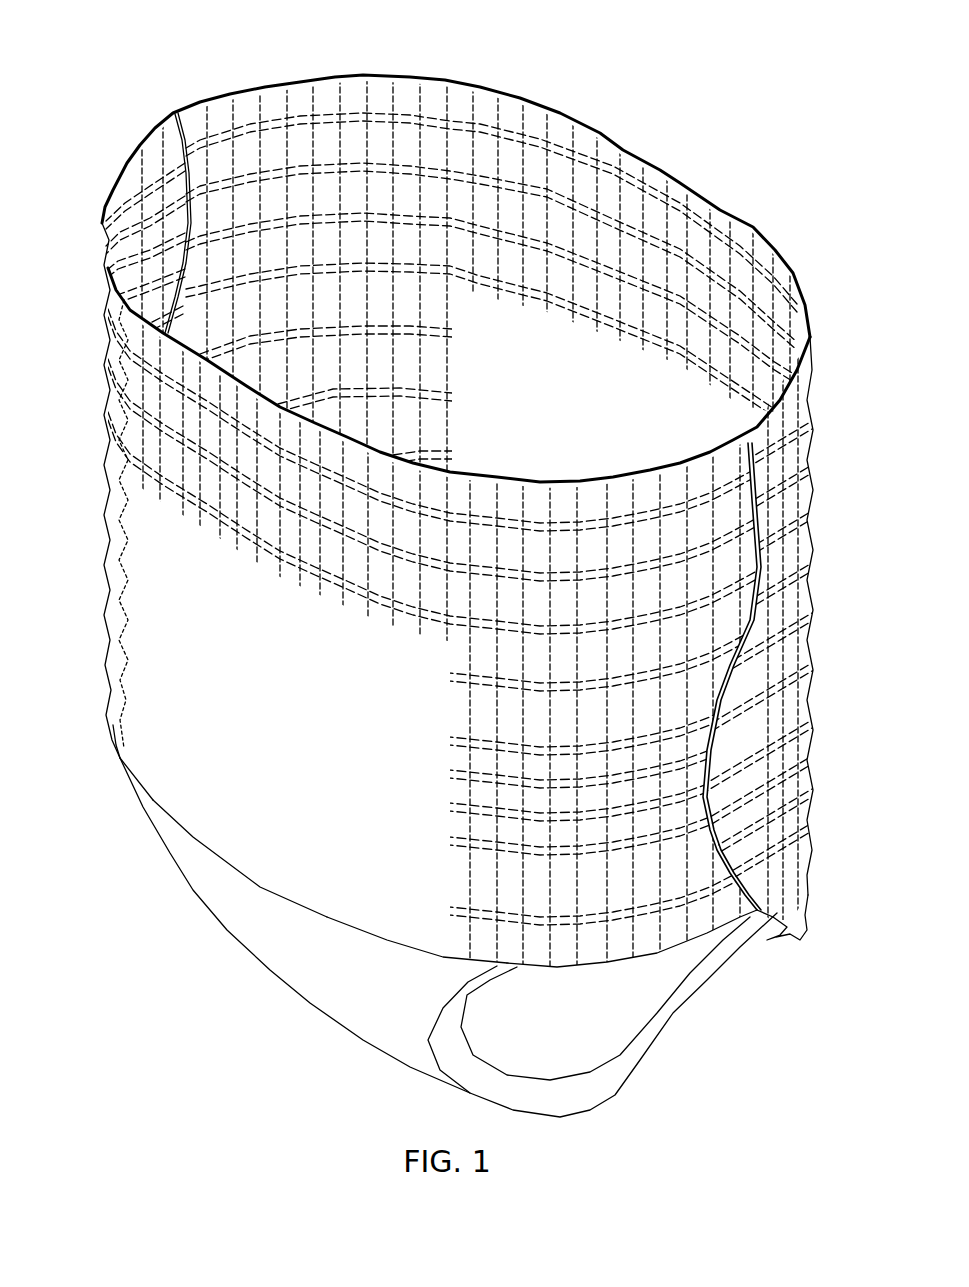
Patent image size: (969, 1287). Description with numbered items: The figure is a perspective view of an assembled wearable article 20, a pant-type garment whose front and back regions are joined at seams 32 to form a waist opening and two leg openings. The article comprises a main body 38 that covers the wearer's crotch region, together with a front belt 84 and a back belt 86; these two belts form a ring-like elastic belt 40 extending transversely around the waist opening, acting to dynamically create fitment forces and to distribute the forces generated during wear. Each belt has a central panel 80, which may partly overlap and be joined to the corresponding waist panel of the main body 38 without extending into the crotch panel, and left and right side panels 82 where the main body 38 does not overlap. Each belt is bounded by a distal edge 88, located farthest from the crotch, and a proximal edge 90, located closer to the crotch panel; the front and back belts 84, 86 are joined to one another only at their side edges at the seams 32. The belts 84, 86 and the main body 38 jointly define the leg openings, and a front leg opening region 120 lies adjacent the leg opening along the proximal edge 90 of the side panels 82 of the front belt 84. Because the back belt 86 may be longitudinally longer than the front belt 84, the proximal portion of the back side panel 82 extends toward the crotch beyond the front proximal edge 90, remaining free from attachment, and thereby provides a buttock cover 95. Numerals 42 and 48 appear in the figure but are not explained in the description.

The wearable article 20 is at (143, 48).
The seams 32 is at (166, 116).
The main body 38 is at (304, 1022).
The ring-like elastic belt 40 is at (100, 350).
The crotch region 42 is at (377, 1031).
The leg cuff 48 is at (670, 1022).
The central panel 80 is at (386, 943).
The side panel 82 is at (249, 156).
The front belt 84 is at (152, 806).
The back belt 86 is at (812, 404).
The distal edge 88 is at (722, 213).
The proximal edge 90 is at (260, 887).
The buttock cover 95 is at (812, 894).
The front leg opening region 120 is at (586, 975).